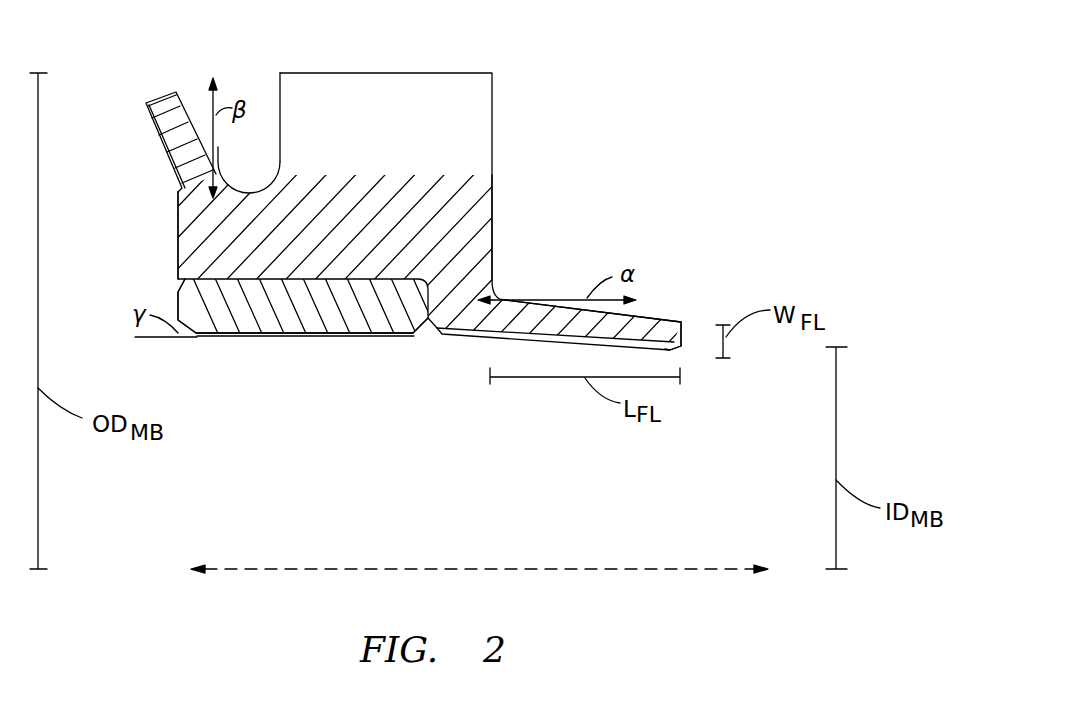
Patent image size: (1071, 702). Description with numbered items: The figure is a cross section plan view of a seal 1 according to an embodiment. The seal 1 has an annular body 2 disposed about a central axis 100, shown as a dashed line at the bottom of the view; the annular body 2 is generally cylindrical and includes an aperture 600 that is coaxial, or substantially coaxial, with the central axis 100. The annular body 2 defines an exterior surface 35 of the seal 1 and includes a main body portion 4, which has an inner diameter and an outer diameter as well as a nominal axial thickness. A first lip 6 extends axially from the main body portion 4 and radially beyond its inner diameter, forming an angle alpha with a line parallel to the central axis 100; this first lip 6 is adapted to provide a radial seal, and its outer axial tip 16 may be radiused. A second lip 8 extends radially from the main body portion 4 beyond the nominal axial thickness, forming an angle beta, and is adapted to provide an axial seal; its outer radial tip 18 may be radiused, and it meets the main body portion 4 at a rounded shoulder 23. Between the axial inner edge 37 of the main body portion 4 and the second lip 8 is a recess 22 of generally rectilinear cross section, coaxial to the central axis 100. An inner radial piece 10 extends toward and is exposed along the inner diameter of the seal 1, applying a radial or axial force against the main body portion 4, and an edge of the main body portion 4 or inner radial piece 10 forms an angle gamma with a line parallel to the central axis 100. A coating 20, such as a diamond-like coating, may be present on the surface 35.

The seal 1 is at (622, 96).
The annular body 2 is at (495, 223).
The main body portion 4 is at (495, 255).
The first lip 6 is at (650, 317).
The second lip 8 is at (176, 92).
The inner radial piece 10 is at (178, 307).
The outer axial tip 16 is at (683, 350).
The outer radial tip 18 is at (146, 103).
The coating 20 is at (240, 337).
The recess 22 is at (255, 85).
The rounded shoulder 23 is at (177, 197).
The exterior surface 35 is at (177, 242).
The axial inner edge 37 is at (280, 152).
The central axis 100 is at (636, 572).
The aperture 600 is at (226, 476).